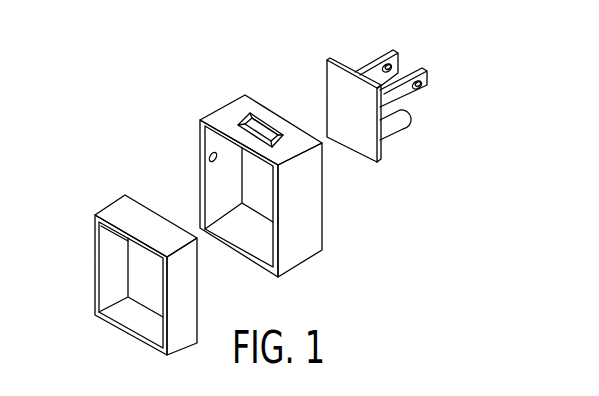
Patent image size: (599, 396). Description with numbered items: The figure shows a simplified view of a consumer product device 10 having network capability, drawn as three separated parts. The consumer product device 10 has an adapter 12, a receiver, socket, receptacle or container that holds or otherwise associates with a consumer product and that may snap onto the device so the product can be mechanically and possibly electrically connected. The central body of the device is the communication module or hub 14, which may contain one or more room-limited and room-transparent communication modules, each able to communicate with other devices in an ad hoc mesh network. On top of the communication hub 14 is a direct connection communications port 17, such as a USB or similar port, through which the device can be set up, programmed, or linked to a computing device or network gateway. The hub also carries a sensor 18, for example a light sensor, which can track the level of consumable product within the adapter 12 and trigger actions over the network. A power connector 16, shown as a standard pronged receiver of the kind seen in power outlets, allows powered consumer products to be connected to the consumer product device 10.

The consumer product device 10 is at (142, 75).
The adapter 12 is at (110, 207).
The communication module or hub 14 is at (227, 104).
The power connector 16 is at (372, 61).
The direct connection communications port 17 is at (268, 127).
The sensor 18 is at (209, 158).